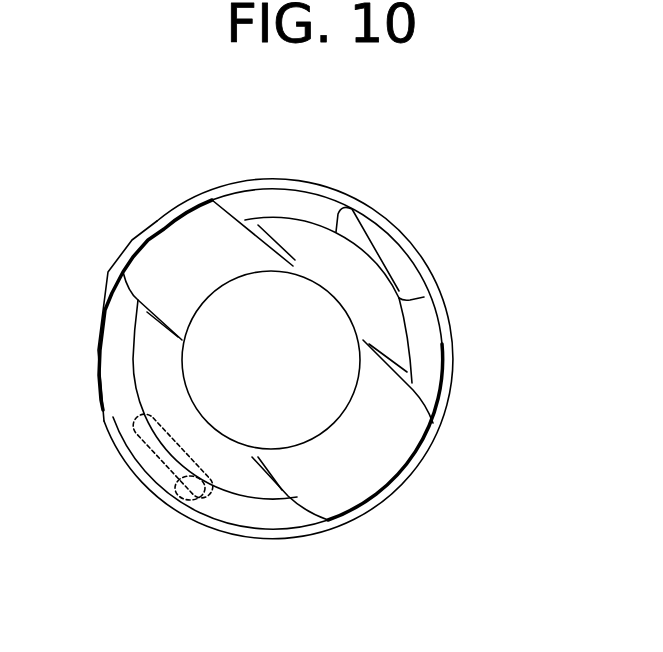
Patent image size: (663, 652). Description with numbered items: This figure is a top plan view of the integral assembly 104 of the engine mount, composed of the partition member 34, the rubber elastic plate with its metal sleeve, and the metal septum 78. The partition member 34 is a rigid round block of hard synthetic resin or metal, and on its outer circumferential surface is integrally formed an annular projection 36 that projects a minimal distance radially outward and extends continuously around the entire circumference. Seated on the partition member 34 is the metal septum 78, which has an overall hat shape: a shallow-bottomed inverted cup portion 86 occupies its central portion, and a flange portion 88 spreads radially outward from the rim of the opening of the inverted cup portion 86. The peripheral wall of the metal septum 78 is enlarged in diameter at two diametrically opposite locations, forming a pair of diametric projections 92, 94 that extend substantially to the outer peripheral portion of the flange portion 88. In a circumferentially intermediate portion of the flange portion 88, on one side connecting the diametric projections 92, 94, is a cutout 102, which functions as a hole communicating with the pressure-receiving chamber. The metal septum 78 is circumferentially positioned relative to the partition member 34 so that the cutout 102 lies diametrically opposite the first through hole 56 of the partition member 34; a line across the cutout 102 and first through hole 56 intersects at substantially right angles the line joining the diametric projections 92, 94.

The partition member 34 is at (262, 160).
The annular projection 36 is at (272, 535).
The first through hole 56 is at (177, 482).
The metal septum 78 is at (316, 546).
The inverted cup portion 86 is at (118, 373).
The flange portion 88 is at (427, 352).
The diametric projection 92 is at (352, 495).
The diametric projection 94 is at (208, 224).
The cutout 102 is at (358, 216).
The integral assembly 104 is at (476, 469).